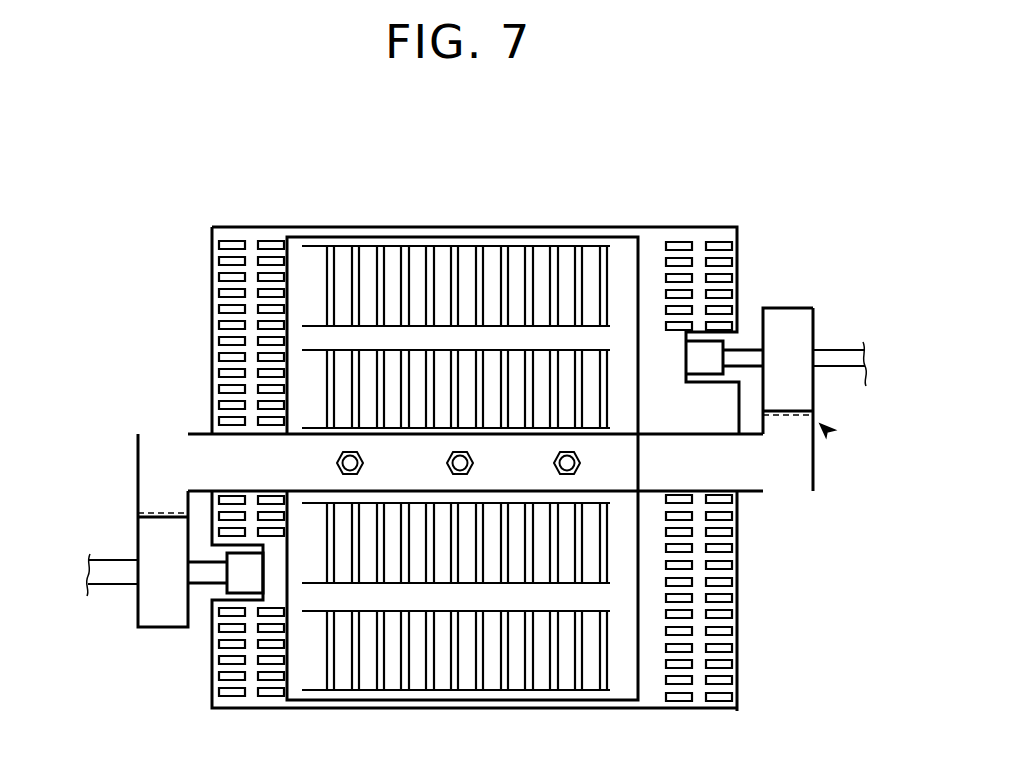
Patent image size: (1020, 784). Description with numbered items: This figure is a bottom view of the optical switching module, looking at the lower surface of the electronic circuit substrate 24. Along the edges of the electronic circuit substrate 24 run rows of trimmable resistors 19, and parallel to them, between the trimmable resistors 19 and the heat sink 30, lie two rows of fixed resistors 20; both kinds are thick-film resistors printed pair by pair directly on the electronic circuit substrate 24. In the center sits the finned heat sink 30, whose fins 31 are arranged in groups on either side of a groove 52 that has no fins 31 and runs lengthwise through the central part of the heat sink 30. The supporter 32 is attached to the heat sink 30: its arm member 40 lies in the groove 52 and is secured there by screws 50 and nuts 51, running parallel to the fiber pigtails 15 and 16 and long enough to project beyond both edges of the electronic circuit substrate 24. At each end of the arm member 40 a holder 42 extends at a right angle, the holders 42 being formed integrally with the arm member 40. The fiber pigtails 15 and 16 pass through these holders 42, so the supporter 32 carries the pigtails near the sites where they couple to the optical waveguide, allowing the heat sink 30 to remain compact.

The fiber pigtail 15 is at (107, 585).
The fiber pigtail 16 is at (842, 350).
The trimmable resistors 19 is at (724, 243).
The fixed resistors 20 is at (678, 243).
The electronic circuit substrate 24 is at (655, 695).
The heat sink 30 is at (622, 690).
The fins 31 is at (516, 262).
The supporter 32 is at (832, 431).
The arm member 40 is at (787, 482).
The holders 42 is at (143, 538).
The screws 50 is at (364, 463).
The nuts 51 is at (336, 463).
The groove 52 is at (612, 490).